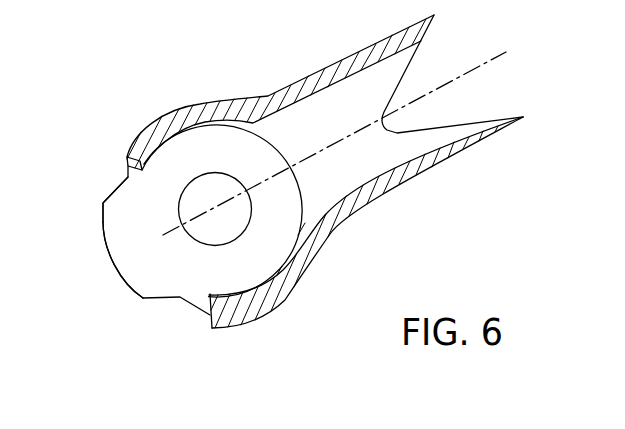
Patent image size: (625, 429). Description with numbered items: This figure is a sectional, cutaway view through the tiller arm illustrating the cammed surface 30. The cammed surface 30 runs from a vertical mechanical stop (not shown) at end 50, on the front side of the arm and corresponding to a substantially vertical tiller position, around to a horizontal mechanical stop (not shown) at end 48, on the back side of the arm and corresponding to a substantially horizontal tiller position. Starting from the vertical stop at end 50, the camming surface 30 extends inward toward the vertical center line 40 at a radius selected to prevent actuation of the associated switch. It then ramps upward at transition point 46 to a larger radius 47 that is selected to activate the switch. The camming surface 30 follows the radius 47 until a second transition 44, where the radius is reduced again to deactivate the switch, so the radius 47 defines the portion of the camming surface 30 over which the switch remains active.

The cammed surface 30 is at (110, 267).
The vertical center line 40 is at (470, 72).
The second transition 44 is at (143, 299).
The transition point 46 is at (102, 203).
The radius 47 is at (102, 223).
The end 48 is at (238, 340).
The end 50 is at (133, 130).